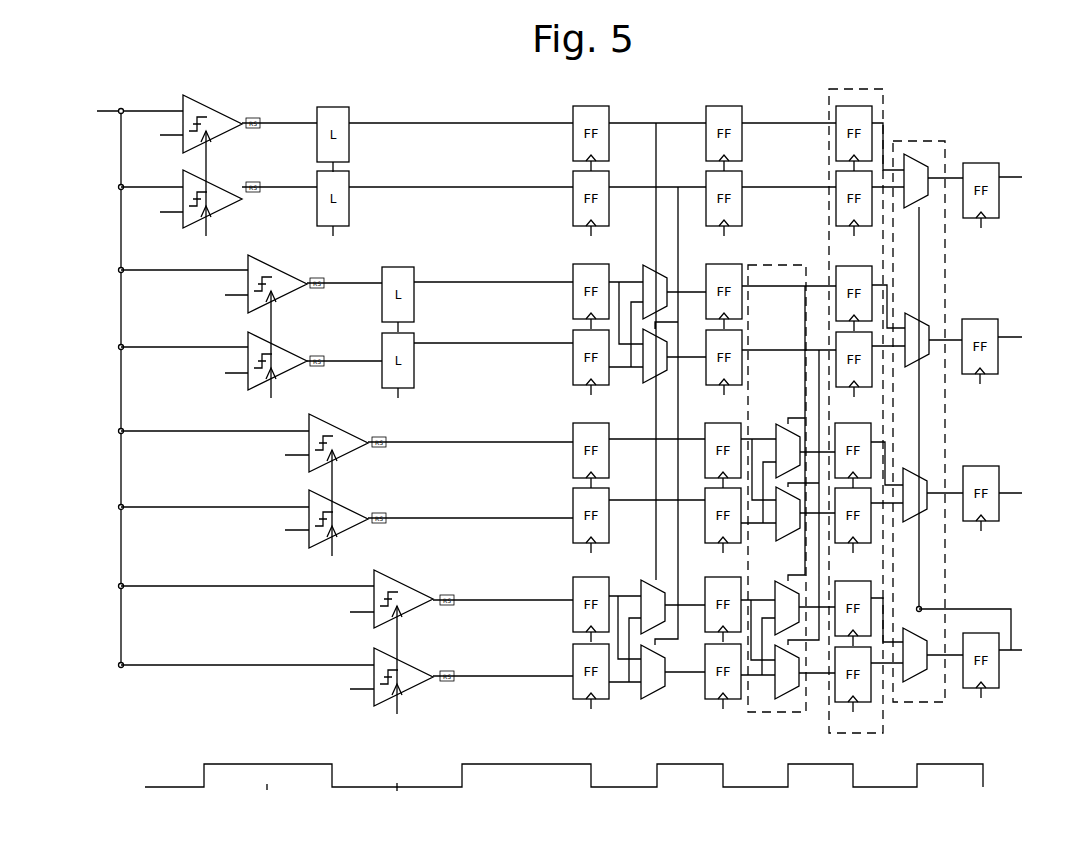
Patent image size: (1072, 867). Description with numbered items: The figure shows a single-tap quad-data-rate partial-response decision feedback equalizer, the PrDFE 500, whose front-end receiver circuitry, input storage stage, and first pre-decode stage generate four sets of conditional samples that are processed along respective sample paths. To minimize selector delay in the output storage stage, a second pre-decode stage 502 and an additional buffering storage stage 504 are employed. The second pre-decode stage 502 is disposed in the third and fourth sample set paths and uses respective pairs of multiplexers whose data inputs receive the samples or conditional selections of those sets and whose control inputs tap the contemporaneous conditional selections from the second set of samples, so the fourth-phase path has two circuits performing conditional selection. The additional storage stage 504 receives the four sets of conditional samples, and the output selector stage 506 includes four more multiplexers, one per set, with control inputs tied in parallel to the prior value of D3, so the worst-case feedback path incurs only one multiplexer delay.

The PrDFE 500 is at (135, 80).
The second pre-decode stage 502 is at (797, 253).
The additional buffering storage stage 504 is at (822, 108).
The output selector stage 506 is at (955, 147).